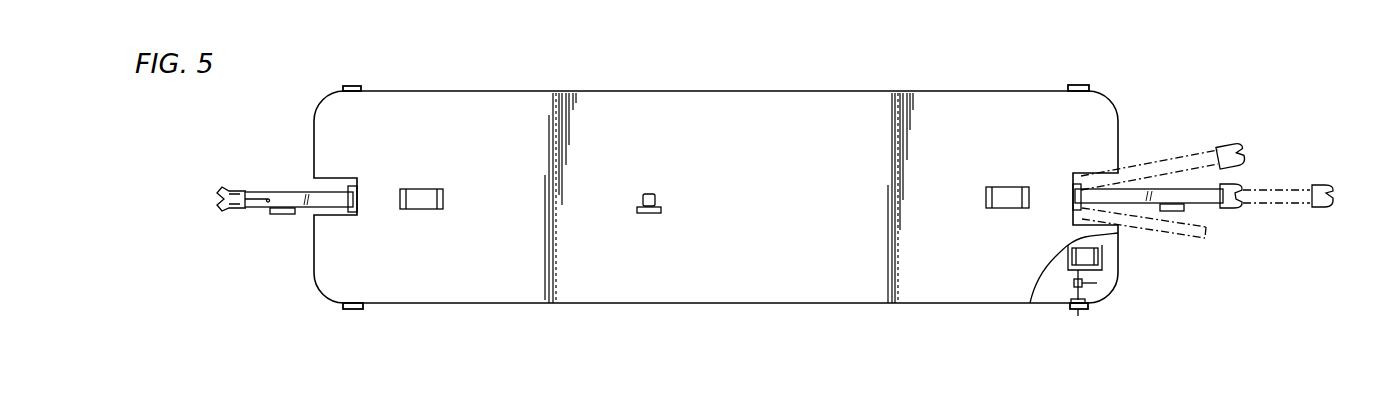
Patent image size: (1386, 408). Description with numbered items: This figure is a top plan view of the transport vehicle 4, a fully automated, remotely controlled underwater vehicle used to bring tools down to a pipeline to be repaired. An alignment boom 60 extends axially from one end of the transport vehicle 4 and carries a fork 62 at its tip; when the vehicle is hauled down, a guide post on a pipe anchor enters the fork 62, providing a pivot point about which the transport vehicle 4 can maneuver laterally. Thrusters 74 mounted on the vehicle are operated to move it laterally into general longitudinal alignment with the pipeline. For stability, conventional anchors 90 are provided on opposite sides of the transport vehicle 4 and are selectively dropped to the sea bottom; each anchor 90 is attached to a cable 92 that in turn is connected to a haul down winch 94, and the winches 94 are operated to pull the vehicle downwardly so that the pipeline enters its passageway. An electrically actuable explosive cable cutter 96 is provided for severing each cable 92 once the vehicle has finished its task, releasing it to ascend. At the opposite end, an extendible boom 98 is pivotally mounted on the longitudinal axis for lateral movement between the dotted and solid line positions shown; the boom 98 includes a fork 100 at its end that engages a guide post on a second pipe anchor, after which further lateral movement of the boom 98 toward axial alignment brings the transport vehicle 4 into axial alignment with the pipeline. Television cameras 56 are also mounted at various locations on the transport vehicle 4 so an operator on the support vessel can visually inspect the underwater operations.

The transport vehicle 4 is at (805, 310).
The television camera 56 is at (283, 216).
The alignment boom 60 is at (293, 190).
The fork 62 is at (222, 209).
The thruster 74 is at (431, 183).
The anchor 90 is at (360, 85).
The cable 92 is at (1086, 302).
The haul down winch 94 is at (1098, 253).
The explosive cable cutter 96 is at (1073, 284).
The extendible boom 98 is at (1247, 176).
The fork 100 is at (1240, 210).